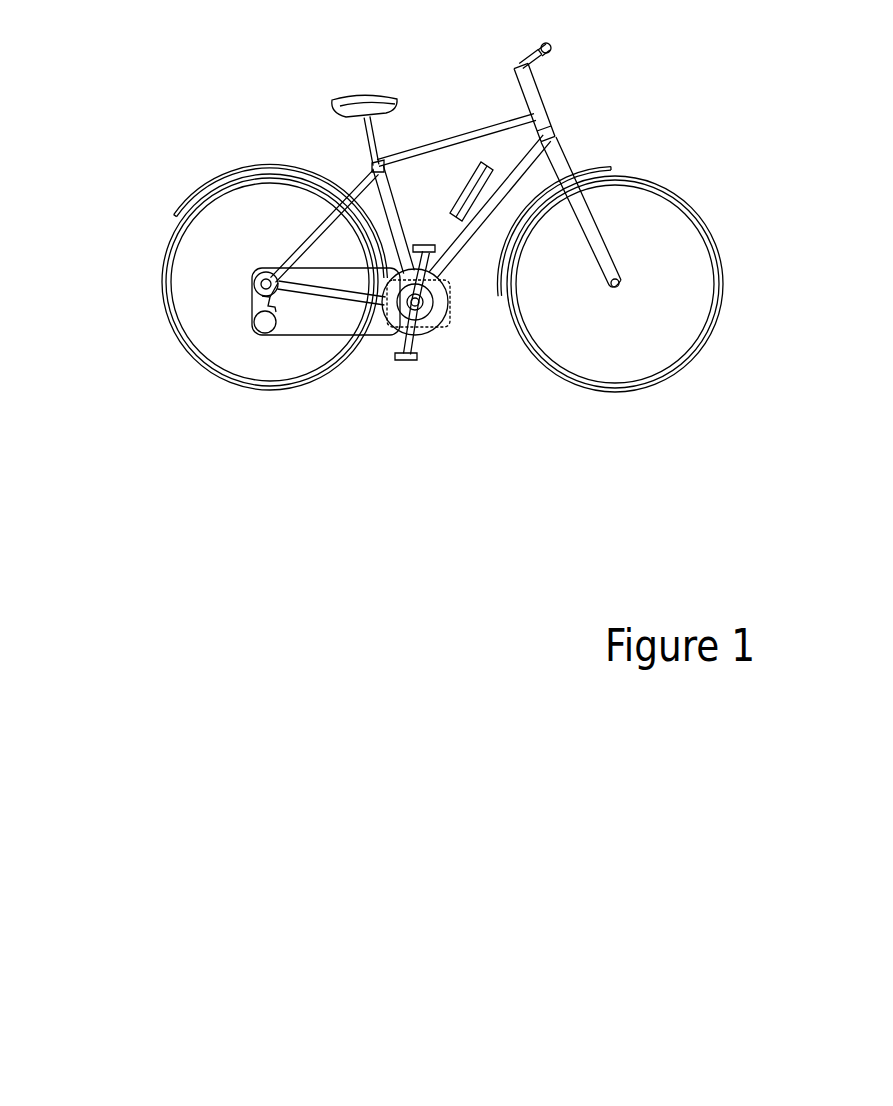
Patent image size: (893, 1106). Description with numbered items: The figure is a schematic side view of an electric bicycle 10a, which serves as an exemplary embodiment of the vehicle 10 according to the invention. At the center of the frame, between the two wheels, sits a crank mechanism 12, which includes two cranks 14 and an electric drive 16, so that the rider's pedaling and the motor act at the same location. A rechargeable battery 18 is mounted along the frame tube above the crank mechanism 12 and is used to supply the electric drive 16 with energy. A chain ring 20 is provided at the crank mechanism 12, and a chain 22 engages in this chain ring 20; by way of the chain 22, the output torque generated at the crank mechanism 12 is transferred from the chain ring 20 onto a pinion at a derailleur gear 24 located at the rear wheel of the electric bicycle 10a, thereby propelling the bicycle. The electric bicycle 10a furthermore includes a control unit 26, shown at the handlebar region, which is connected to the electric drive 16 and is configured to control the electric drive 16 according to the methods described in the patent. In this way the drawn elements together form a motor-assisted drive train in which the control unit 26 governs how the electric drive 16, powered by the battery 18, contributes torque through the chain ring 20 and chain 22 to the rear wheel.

The vehicle 10 is at (215, 87).
The electric bicycle 10a is at (446, 232).
The crank mechanism 12 is at (483, 345).
The cranks 14 is at (417, 348).
The electric drive 16 is at (443, 323).
The rechargeable battery 18 is at (462, 192).
The chain ring 20 is at (450, 301).
The chain 22 is at (305, 337).
The derailleur gear 24 is at (250, 283).
The control unit 26 is at (545, 46).